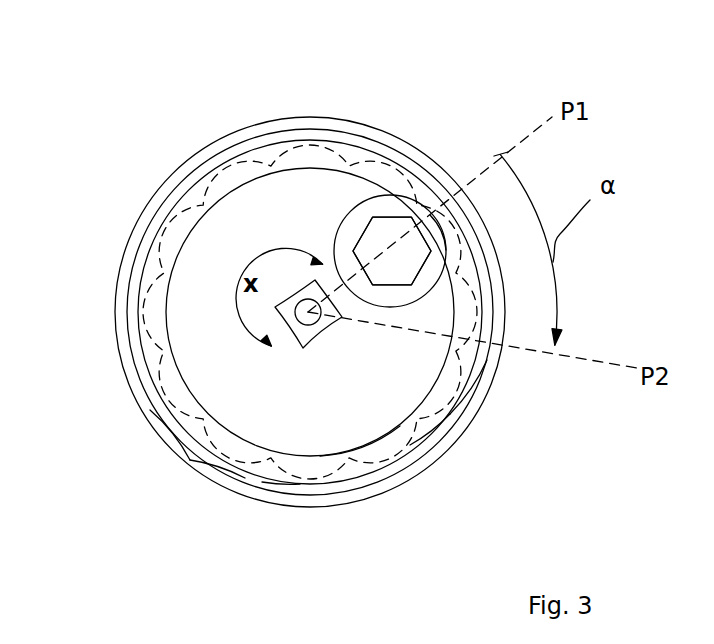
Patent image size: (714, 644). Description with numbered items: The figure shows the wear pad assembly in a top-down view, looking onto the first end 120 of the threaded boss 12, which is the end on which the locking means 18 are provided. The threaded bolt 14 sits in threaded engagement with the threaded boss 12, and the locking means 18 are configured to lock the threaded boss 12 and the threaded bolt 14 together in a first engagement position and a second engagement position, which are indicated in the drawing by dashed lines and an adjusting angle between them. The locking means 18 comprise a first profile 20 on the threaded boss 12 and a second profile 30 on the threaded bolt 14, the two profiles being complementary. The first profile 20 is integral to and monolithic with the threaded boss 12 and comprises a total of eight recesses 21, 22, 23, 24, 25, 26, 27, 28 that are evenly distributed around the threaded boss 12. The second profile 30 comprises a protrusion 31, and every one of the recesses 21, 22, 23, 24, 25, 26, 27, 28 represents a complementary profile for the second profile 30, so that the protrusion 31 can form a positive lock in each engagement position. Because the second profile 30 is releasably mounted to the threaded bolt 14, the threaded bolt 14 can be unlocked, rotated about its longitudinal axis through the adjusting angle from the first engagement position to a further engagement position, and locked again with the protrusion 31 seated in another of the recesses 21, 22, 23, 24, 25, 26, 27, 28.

The threaded boss 12 is at (235, 462).
The threaded bolt 14 is at (367, 408).
The locking means 18 is at (392, 194).
The first profile 20 is at (138, 305).
The recess 21 is at (441, 200).
The recess 22 is at (465, 362).
The recess 23 is at (423, 428).
The recess 24 is at (290, 477).
The recess 25 is at (177, 412).
The recess 26 is at (152, 267).
The recess 27 is at (240, 170).
The recess 28 is at (316, 150).
The second profile 30 is at (408, 203).
The protrusion 31 is at (408, 203).
The first end 120 is at (158, 188).